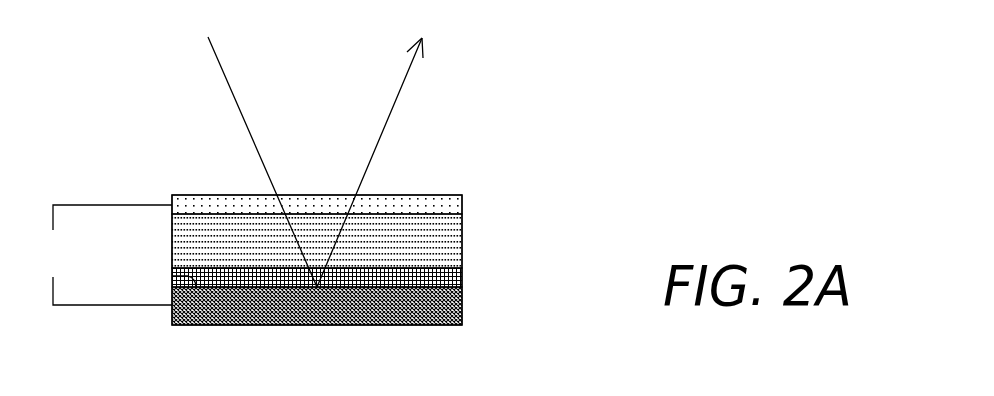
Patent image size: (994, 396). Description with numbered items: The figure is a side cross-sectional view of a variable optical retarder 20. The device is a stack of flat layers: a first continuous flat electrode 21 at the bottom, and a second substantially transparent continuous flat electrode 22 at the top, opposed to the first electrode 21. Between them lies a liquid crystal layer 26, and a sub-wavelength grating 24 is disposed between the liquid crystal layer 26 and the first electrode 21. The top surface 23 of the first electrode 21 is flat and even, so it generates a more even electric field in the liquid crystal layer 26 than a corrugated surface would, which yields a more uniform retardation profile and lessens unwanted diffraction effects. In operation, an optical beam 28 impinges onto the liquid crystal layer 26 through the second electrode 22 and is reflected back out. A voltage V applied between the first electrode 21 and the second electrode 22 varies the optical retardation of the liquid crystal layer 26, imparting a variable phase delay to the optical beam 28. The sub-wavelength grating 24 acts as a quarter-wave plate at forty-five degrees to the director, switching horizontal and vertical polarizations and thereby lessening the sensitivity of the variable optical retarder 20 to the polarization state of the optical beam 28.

The variable optical retarder 20 is at (362, 195).
The first continuous flat electrode 21 is at (462, 316).
The second substantially transparent continuous flat electrode 22 is at (462, 203).
The top surface 23 is at (172, 276).
The sub-wavelength grating 24 is at (462, 278).
The liquid crystal layer 26 is at (462, 243).
The optical beam 28 is at (223, 67).